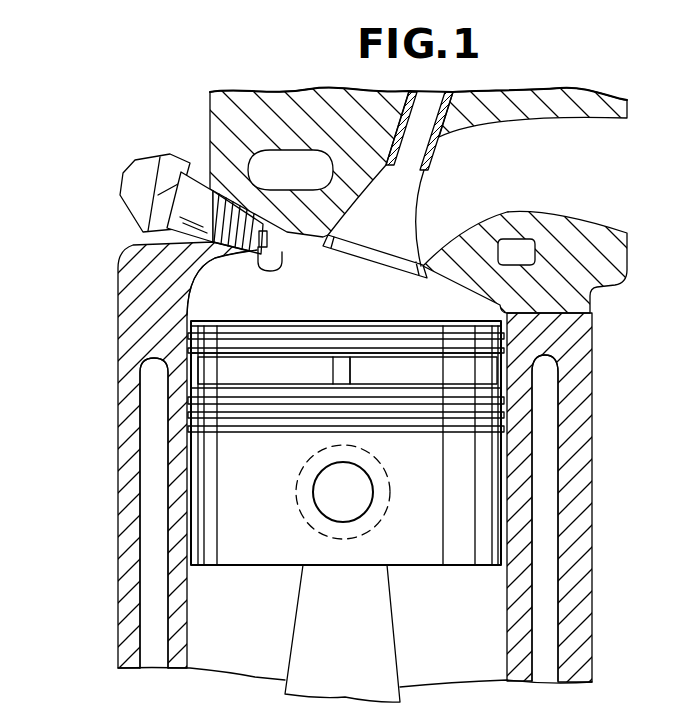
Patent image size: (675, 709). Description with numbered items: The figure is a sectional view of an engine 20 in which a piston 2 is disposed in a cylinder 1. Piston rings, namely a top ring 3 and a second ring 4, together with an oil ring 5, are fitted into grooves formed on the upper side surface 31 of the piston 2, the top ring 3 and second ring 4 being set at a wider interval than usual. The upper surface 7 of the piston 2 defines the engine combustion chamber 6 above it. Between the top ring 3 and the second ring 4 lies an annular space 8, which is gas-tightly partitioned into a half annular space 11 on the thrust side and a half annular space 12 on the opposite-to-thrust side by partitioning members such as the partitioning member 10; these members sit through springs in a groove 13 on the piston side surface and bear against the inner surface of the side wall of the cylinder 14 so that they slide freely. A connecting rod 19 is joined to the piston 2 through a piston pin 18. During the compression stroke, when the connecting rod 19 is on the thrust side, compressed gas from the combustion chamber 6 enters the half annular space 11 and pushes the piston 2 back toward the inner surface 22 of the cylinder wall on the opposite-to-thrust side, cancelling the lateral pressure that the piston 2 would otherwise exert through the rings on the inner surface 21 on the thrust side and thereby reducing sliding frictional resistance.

The cylinder 1 is at (130, 483).
The piston 2 is at (200, 480).
The top ring 3 is at (190, 343).
The second ring 4 is at (190, 400).
The oil ring 5 is at (190, 425).
The engine combustion chamber 6 is at (133, 244).
The upper surface of the piston 7 is at (238, 297).
The annular space 8 is at (467, 373).
The partitioning member 10 is at (352, 370).
The half annular space on the thrust side 11 is at (507, 397).
The half annular space on the opposite-to-thrust side 12 is at (190, 373).
The groove 13 is at (325, 370).
The side wall of the cylinder 14 is at (189, 626).
The piston pin 18 is at (322, 500).
The connecting rod 19 is at (385, 647).
The engine 20 is at (66, 571).
The inner surface of the side wall of the cylinder on the thrust side 21 is at (506, 596).
The inner surface of the side wall of the cylinder on the opposite-to-thrust side 22 is at (189, 582).
The upper side surface of the piston 31 is at (490, 500).